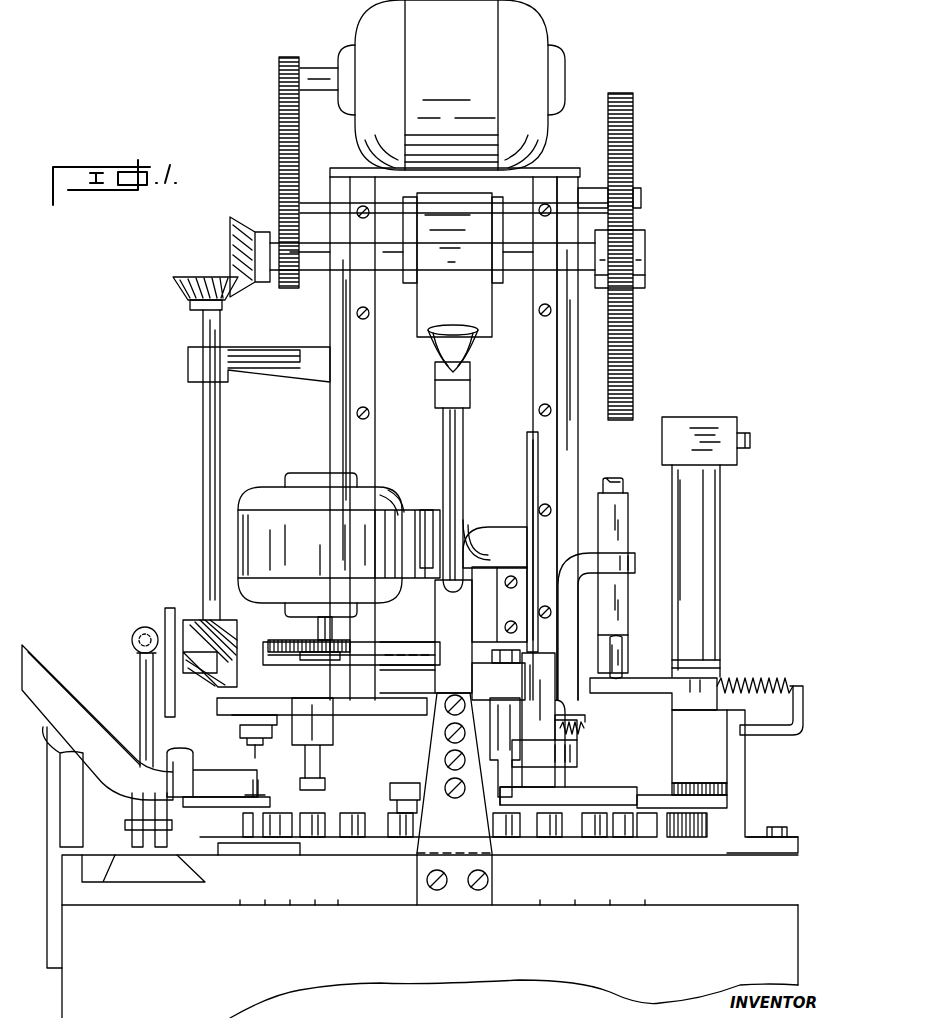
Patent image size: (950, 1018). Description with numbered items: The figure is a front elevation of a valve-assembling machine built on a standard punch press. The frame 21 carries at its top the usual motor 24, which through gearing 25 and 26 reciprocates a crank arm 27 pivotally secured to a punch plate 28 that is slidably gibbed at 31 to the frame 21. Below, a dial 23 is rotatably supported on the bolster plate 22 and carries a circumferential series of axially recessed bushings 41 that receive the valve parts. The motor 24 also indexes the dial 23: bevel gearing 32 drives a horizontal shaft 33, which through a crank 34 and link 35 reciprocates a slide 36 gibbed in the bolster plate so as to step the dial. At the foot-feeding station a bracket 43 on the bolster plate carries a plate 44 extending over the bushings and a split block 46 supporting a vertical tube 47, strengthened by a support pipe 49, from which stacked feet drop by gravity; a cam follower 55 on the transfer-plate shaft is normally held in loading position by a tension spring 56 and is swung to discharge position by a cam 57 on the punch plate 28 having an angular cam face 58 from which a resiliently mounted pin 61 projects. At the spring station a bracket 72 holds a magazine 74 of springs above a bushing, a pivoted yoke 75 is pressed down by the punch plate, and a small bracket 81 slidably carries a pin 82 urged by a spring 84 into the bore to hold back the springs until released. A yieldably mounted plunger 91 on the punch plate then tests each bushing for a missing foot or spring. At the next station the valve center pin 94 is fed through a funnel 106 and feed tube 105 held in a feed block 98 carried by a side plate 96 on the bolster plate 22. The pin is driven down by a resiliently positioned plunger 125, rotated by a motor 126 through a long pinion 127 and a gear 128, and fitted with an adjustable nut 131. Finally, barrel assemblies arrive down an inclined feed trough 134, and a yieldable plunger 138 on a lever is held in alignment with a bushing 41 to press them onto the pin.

The frame 21 is at (580, 473).
The bolster plate 22 is at (580, 897).
The dial 23 is at (362, 848).
The motor 24 is at (548, 48).
The gearing 25 is at (278, 132).
The gearing 26 is at (634, 167).
The crank arm 27 is at (490, 316).
The punch plate 28 is at (377, 690).
The gibs 31 is at (532, 380).
The bevel gearing 32 is at (187, 306).
The horizontal shaft 33 is at (205, 676).
The crank 34 is at (165, 615).
The link 35 is at (140, 707).
The slide 36 is at (165, 873).
The bushings 41 is at (597, 812).
The bracket 43 is at (745, 783).
The plate 44 is at (693, 808).
The split block 46 is at (672, 750).
The vertical tube 47 is at (672, 558).
The support pipe 49 is at (720, 547).
The cam follower 55 is at (628, 678).
The tension spring 56 is at (741, 680).
The cam 57 is at (627, 631).
The cam face 58 is at (611, 655).
The resiliently mounted pin 61 is at (611, 667).
The bracket 72 is at (568, 793).
The magazine 74 is at (528, 489).
The yoke 75 is at (578, 755).
The small bracket 81 is at (578, 722).
The pin 82 is at (590, 728).
The spring 84 is at (577, 735).
The plunger 91 is at (510, 793).
The valve center pin 94 is at (255, 790).
The side plate 96 is at (452, 900).
The feed block 98 is at (466, 628).
The feed tube 105 is at (463, 484).
The funnel 106 is at (470, 345).
The plunger 125 is at (335, 763).
The motor 126 is at (270, 484).
The long pinion 127 is at (327, 628).
The gear 128 is at (347, 652).
The nut 131 is at (325, 786).
The inclined feed trough 134 is at (65, 686).
The yieldable plunger 138 is at (256, 753).